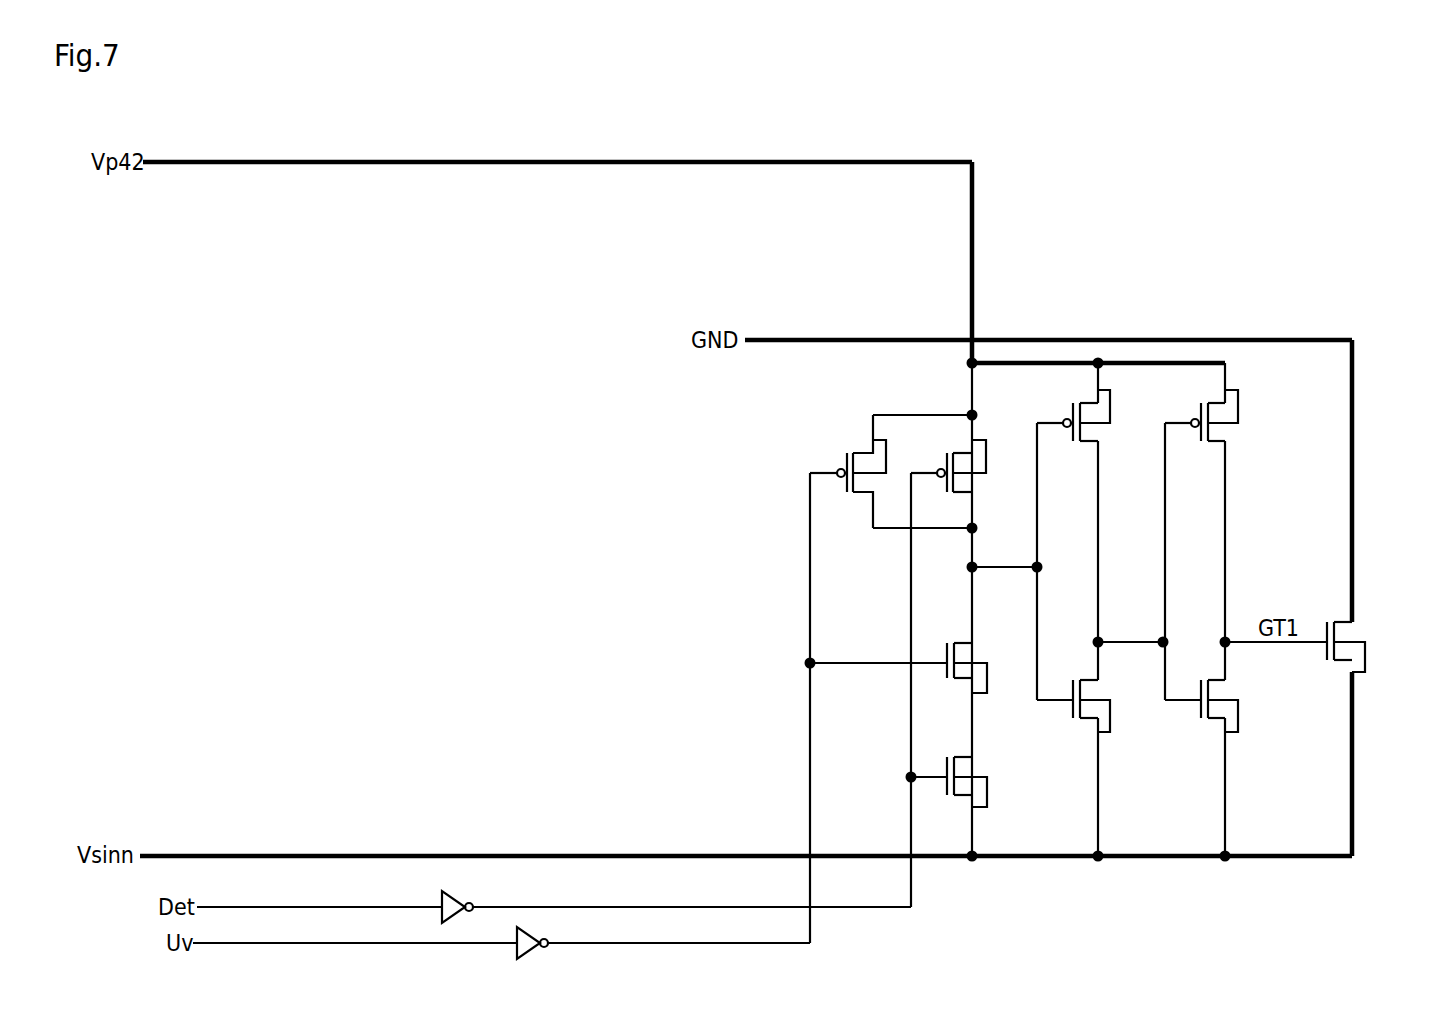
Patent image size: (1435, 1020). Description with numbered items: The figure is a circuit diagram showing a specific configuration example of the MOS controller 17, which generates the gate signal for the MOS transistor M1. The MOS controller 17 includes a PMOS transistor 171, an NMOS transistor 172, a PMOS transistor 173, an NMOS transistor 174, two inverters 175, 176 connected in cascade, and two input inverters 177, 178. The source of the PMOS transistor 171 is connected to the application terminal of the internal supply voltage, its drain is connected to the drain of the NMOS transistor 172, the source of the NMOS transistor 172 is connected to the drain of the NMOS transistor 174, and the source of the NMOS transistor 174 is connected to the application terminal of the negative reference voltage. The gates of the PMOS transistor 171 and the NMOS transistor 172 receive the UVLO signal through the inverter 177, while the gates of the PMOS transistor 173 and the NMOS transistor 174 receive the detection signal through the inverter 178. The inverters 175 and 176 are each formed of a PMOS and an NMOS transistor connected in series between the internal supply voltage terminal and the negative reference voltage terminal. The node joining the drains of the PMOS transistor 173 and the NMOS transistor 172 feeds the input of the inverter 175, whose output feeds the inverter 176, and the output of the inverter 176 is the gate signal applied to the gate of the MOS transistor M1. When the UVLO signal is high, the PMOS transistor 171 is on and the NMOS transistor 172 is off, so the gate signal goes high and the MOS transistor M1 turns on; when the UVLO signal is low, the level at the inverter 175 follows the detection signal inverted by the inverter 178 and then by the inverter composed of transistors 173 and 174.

The MOS controller 17 is at (1053, 582).
The PMOS transistor 171 is at (854, 448).
The NMOS transistor 172 is at (962, 640).
The PMOS transistor 173 is at (952, 452).
The NMOS transistor 174 is at (966, 752).
The inverter 175 is at (1066, 401).
The inverter 176 is at (1194, 401).
The inverter 177 is at (525, 930).
The inverter 178 is at (447, 893).
The MOS transistor M1 is at (1362, 630).